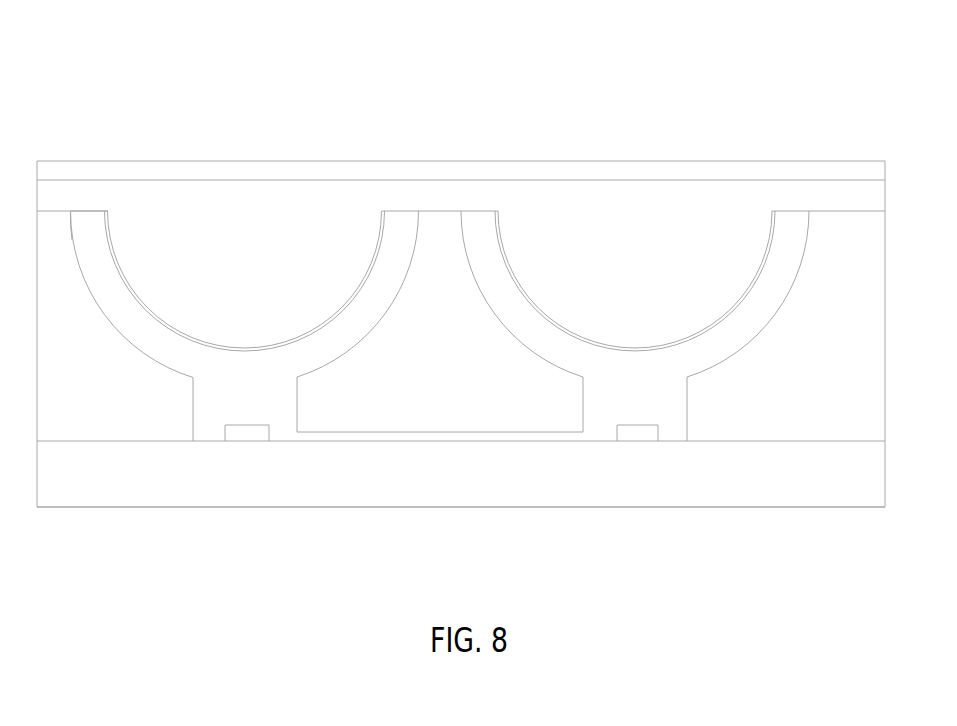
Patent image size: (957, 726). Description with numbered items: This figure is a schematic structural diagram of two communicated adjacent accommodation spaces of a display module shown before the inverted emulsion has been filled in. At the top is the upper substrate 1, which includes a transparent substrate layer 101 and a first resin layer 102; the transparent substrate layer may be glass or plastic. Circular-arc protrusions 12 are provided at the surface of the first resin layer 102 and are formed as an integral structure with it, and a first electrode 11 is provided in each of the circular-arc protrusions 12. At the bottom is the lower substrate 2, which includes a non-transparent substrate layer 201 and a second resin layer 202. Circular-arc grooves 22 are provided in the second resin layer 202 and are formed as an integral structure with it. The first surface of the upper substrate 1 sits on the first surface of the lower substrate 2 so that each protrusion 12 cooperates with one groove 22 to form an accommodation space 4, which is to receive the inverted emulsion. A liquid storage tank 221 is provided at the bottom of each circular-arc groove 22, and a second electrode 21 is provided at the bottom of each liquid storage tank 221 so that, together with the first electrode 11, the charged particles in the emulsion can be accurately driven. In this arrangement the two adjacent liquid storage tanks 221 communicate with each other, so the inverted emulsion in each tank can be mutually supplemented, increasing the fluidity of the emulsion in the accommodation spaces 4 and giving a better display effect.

The upper substrate 1 is at (318, 84).
The transparent substrate layer 101 is at (232, 168).
The first resin layer 102 is at (348, 200).
The accommodation space 4 is at (85, 217).
The first electrode 11 is at (109, 224).
The protrusion 12 is at (207, 313).
The groove 22 is at (143, 352).
The liquid storage tank 221 is at (222, 397).
The second electrode 21 is at (252, 435).
The second resin layer 202 is at (337, 413).
The non-transparent substrate layer 201 is at (447, 477).
The lower substrate 2 is at (413, 562).